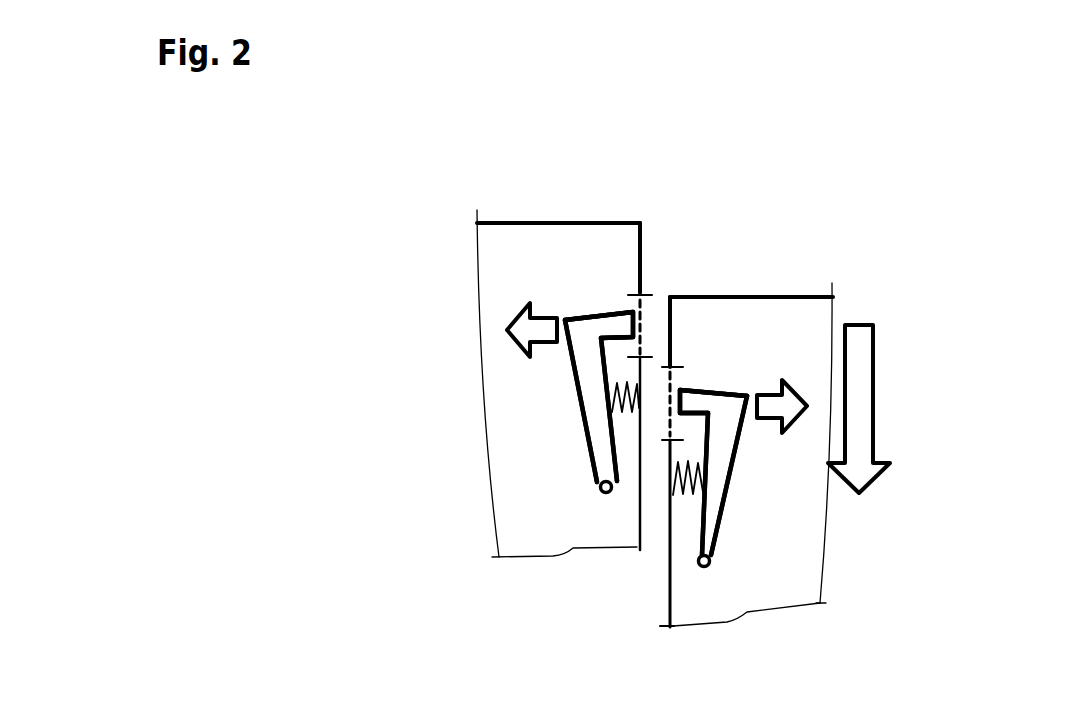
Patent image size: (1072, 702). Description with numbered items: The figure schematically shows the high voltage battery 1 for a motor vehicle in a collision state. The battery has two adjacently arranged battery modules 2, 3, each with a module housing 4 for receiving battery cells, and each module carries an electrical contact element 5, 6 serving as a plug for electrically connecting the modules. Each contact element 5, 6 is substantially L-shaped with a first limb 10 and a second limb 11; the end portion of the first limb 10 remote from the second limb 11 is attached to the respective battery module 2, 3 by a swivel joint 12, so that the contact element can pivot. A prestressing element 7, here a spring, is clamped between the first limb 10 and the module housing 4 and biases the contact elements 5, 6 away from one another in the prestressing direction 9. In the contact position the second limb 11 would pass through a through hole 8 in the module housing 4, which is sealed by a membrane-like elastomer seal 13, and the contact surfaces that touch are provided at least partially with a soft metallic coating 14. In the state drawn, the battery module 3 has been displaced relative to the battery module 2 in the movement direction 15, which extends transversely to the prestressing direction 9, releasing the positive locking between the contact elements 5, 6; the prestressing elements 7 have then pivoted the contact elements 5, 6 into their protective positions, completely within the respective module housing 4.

The high voltage battery 1 is at (946, 411).
The battery module 2 is at (490, 210).
The battery module 3 is at (818, 284).
The module housing 4 is at (519, 222).
The electrical contact element 5 is at (572, 429).
The electrical contact element 6 is at (743, 482).
The prestressing element 7 is at (625, 412).
The through hole 8 is at (665, 360).
The prestressing direction 9 is at (507, 332).
The first limb 10 is at (592, 398).
The second limb 11 is at (607, 332).
The swivel joint 12 is at (603, 495).
The seal 13 is at (627, 314).
The soft metallic coating 14 is at (630, 322).
The movement direction 15 is at (857, 440).